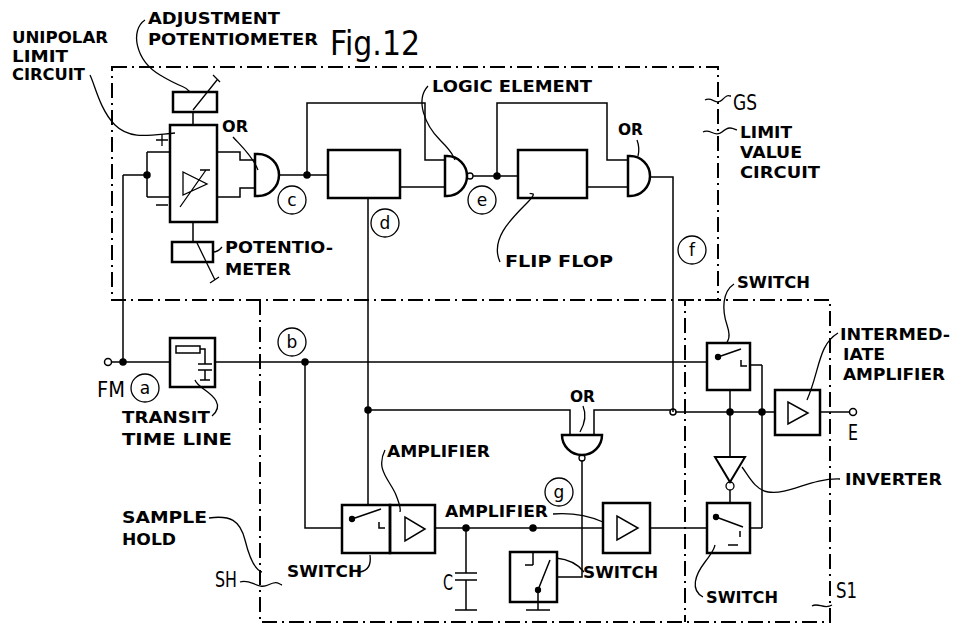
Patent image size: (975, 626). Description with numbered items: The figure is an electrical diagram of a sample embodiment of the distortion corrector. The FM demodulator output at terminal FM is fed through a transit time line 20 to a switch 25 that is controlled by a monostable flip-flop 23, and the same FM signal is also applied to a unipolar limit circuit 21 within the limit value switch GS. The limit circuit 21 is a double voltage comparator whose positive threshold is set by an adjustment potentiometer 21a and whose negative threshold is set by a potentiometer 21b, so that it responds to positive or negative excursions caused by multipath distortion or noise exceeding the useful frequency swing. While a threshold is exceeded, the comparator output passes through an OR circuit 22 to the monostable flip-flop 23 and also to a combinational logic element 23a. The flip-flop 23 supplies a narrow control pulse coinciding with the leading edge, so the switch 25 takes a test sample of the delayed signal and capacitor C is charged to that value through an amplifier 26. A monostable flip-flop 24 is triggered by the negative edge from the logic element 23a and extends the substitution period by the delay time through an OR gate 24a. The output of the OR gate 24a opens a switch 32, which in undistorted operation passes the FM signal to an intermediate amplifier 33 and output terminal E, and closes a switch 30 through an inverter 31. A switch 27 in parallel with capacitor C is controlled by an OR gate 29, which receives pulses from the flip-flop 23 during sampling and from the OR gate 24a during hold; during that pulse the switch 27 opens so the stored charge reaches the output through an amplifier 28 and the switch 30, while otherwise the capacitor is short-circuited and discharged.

The transit time line 20 is at (207, 337).
The unipolar limit circuit 21 is at (186, 173).
The adjustment potentiometer 21a is at (173, 100).
The potentiometer 21b is at (172, 252).
The OR circuit 22 is at (259, 154).
The monostable flip-flop 23 is at (344, 199).
The combinational logic element 23a is at (452, 200).
The monostable flip-flop 24 is at (550, 200).
The OR gate 24a is at (640, 200).
The switch 25 is at (358, 504).
The amplifier 26 is at (414, 504).
The switch 27 is at (557, 590).
The amplifier 28 is at (628, 497).
The OR gate 29 is at (566, 440).
The switch 30 is at (727, 556).
The inverter 31 is at (719, 463).
The switch 32 is at (750, 345).
The intermediate amplifier 33 is at (812, 436).